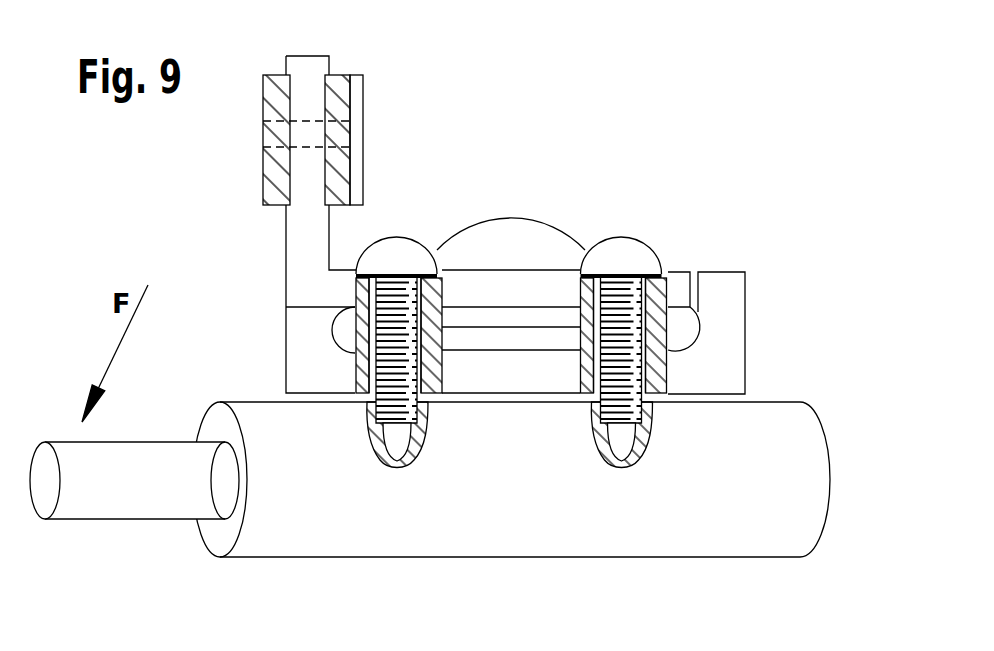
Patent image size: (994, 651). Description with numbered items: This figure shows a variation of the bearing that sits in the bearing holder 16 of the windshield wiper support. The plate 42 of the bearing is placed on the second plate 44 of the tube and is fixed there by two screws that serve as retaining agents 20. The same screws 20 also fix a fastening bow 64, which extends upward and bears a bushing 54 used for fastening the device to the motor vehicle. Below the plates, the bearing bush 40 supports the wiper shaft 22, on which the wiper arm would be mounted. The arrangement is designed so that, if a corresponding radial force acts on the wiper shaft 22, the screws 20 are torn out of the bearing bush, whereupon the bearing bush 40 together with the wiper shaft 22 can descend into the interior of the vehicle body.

The bearing holder 16 is at (597, 113).
The retaining element 20 is at (622, 252).
The wiper shaft 22 is at (126, 492).
The bearing bush 40 is at (417, 518).
The plate 42 is at (725, 310).
The second plate 44 is at (679, 325).
The bushing 54 is at (346, 101).
The fastening bow 64 is at (297, 265).